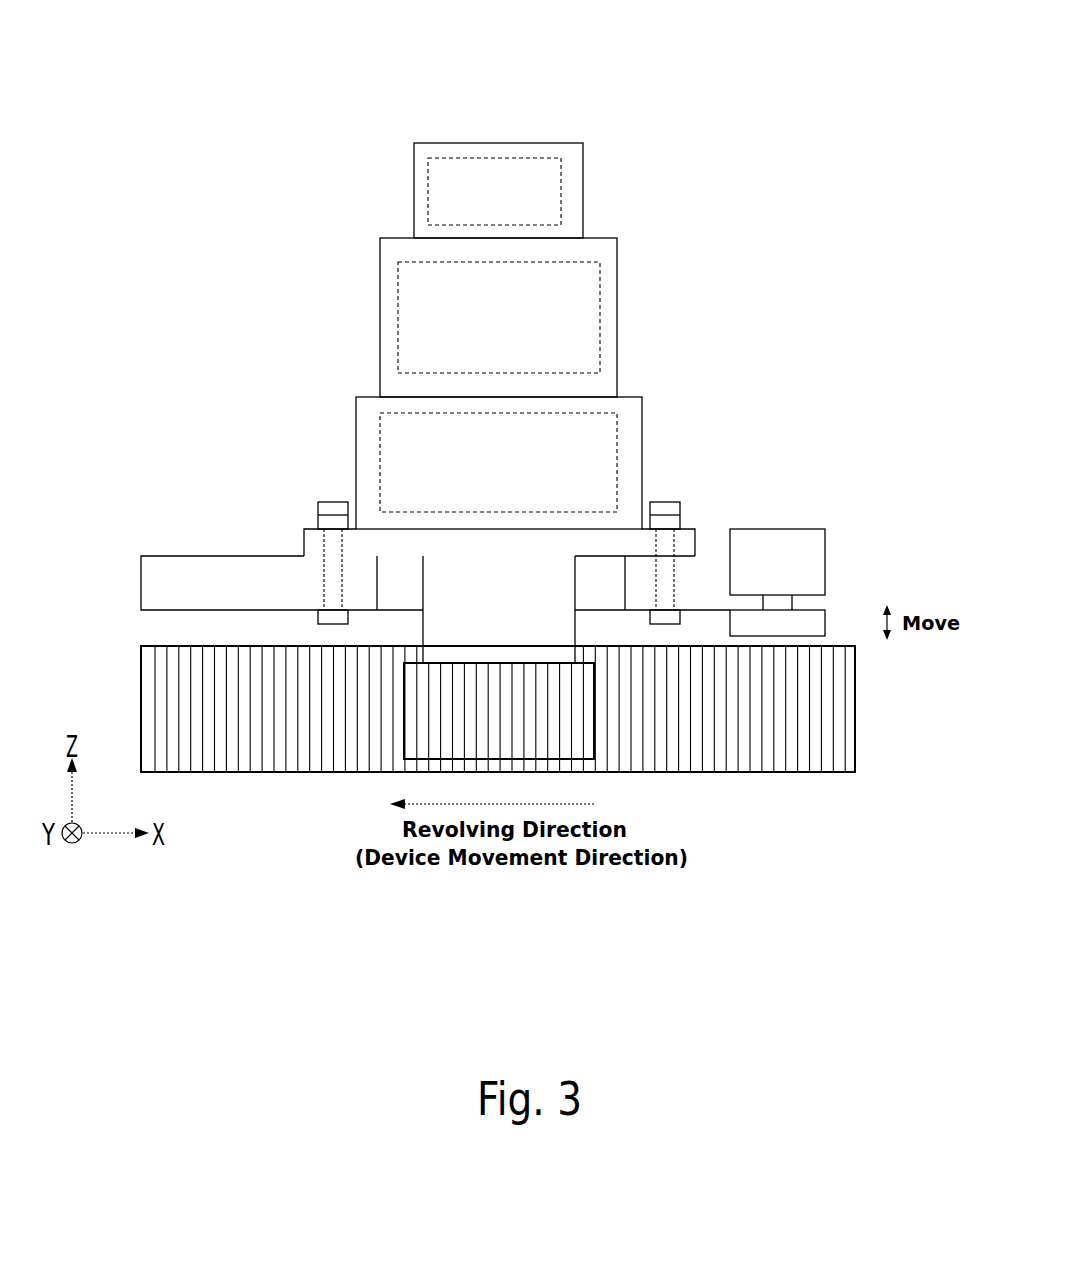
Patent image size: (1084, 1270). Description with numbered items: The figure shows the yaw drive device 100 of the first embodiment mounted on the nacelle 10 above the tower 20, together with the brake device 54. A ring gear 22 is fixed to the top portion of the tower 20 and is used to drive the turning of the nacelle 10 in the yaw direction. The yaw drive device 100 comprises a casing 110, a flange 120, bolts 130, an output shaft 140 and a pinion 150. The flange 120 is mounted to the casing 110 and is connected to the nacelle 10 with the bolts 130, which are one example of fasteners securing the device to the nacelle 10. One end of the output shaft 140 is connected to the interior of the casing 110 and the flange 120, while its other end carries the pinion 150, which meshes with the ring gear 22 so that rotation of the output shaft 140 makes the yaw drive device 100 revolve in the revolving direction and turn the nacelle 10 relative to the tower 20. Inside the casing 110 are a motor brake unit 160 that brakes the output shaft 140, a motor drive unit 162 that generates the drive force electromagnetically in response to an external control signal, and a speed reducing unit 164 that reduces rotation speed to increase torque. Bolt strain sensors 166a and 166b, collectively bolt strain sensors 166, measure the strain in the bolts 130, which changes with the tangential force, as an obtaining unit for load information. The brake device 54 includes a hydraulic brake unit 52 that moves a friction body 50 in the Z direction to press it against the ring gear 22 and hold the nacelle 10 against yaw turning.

The nacelle 10 is at (141, 590).
The tower 20 is at (141, 695).
The ring gear 22 is at (727, 772).
The friction body 50 is at (826, 611).
The hydraulic brake unit 52 is at (805, 530).
The brake device 54 is at (858, 530).
The yaw drive device 100 is at (632, 117).
The casing 110 is at (500, 143).
The flange 120 is at (316, 528).
The bolts 130 is at (524, 493).
The output shaft 140 is at (577, 625).
The pinion 150 is at (404, 703).
The motor brake unit 160 is at (561, 194).
The motor drive unit 162 is at (600, 298).
The speed reducing unit 164 is at (612, 418).
The bolt strain sensors 166 is at (530, 446).
The bolt strain sensor 166a is at (665, 502).
The bolt strain sensor 166b is at (334, 502).